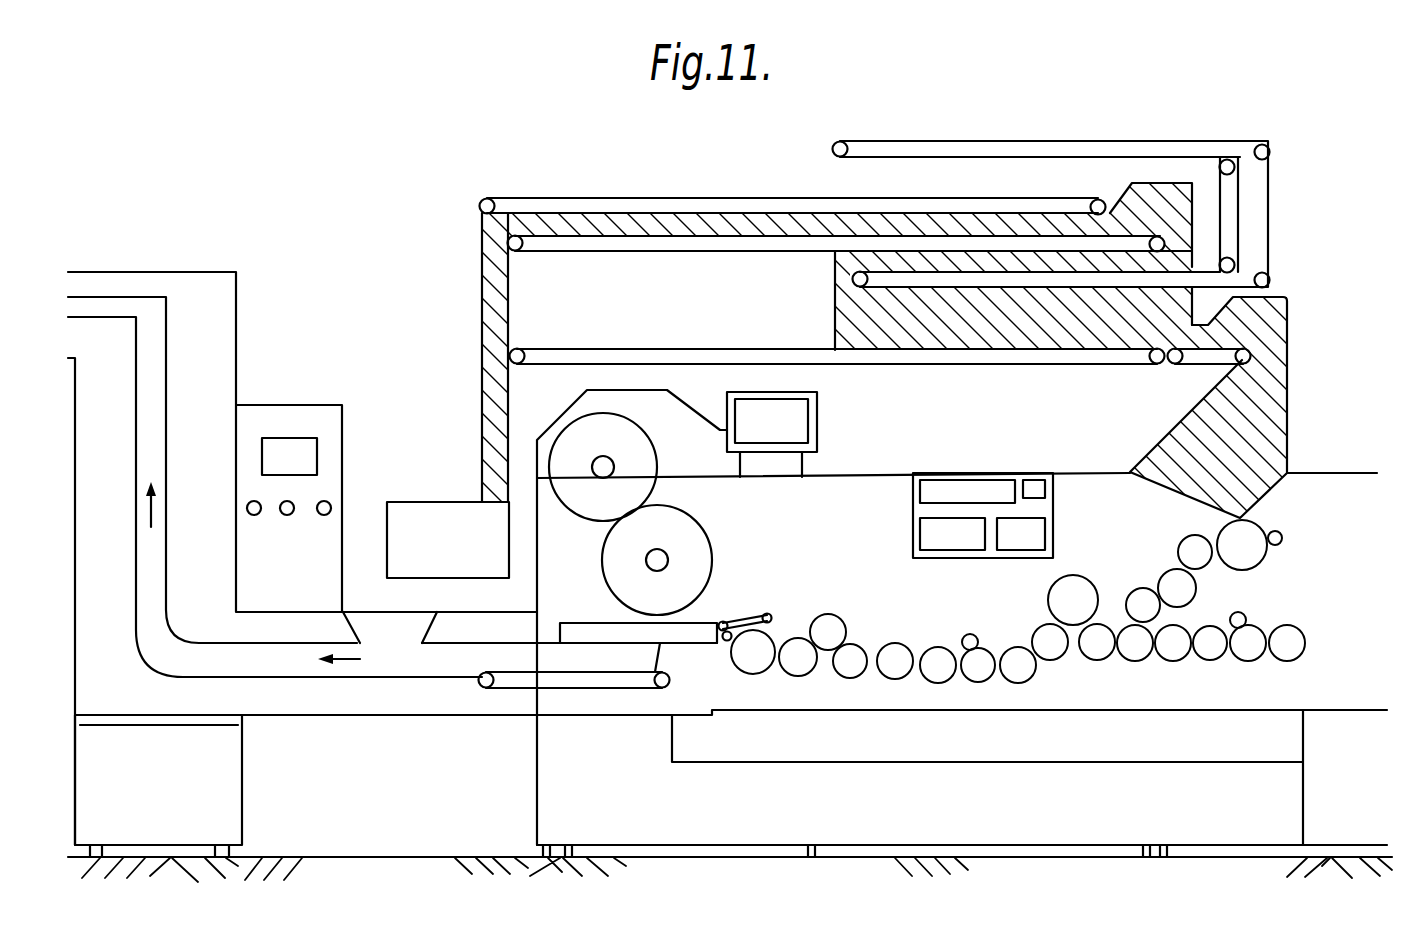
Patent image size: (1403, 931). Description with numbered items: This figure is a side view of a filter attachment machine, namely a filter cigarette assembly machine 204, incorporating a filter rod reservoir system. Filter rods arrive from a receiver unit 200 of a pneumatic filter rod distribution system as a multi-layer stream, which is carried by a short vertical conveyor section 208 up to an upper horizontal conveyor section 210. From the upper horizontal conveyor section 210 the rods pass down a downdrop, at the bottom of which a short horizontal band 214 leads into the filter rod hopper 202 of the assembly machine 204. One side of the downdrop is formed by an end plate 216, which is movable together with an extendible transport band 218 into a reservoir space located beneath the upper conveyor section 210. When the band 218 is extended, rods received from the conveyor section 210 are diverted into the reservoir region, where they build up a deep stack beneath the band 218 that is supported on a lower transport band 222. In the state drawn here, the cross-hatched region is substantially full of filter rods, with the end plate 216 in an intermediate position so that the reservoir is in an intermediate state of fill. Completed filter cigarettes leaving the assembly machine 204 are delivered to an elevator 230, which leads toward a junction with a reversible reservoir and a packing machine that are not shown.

The receiver unit 200 is at (470, 557).
The filter rod hopper 202 is at (1197, 443).
The filter cigarette assembly machine 204 is at (842, 541).
The vertical conveyor section 208 is at (485, 327).
The upper horizontal conveyor section 210 is at (648, 225).
The short horizontal band 214 is at (1218, 338).
The end plate 216 is at (835, 302).
The extendible transport band 218 is at (908, 272).
The lower transport band 222 is at (647, 348).
The elevator 230 is at (163, 497).